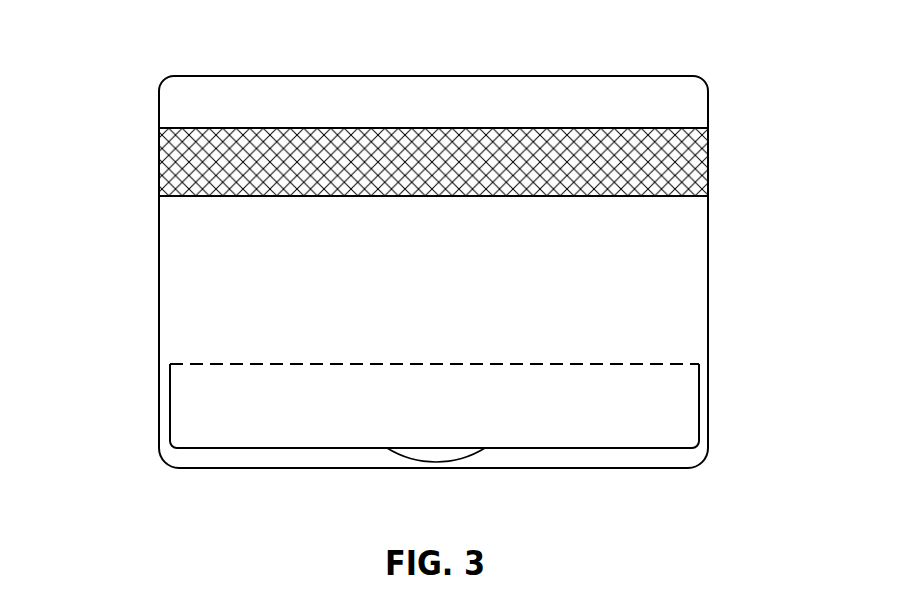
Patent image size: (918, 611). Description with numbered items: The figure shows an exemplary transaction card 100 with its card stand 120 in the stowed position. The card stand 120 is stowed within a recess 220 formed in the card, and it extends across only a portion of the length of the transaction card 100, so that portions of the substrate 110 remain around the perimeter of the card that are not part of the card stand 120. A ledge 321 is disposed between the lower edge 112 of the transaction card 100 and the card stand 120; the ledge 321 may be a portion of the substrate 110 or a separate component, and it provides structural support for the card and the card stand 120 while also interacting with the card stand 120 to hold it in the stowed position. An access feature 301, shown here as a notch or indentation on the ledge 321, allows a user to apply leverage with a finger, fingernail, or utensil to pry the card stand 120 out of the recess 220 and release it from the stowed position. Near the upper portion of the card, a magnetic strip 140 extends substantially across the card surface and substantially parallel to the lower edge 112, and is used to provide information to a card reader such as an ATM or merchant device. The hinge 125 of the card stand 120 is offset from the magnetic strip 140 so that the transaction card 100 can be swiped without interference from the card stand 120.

The transaction card 100 is at (146, 70).
The substrate 110 is at (158, 312).
The lower edge 112 is at (307, 471).
The card stand 120 is at (700, 418).
The hinge 125 is at (485, 364).
The magnetic strip 140 is at (708, 162).
The recess 220 is at (683, 390).
The access feature 301 is at (465, 455).
The ledge 321 is at (200, 460).